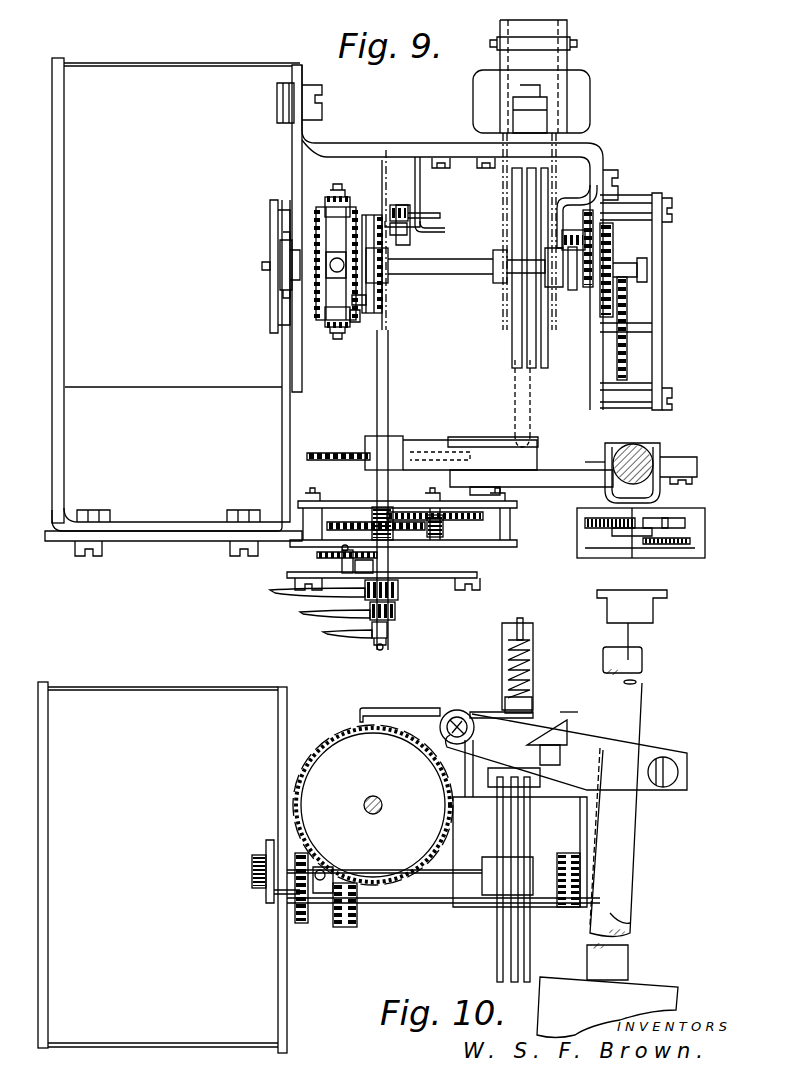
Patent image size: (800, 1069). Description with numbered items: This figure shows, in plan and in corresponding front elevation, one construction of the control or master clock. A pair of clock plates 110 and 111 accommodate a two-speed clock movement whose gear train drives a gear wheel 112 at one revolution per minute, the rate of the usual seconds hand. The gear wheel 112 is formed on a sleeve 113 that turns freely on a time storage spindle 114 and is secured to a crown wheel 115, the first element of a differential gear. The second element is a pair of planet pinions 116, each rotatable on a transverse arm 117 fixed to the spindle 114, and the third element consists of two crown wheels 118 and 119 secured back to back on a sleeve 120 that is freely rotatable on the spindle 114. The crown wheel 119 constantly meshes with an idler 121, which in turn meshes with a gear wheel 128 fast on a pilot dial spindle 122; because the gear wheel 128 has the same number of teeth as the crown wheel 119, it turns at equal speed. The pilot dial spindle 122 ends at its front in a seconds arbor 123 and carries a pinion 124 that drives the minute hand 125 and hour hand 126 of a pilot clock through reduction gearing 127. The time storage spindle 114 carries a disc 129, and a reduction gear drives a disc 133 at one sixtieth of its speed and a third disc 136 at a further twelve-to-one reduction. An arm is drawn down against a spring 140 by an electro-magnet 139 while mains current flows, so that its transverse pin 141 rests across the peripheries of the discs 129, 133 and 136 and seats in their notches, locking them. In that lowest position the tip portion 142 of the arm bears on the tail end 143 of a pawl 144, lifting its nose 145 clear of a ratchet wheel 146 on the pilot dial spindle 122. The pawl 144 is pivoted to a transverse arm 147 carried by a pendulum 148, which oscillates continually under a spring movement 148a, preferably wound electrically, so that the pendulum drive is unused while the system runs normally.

In FIG. 9, the clock plate 110 is at (64, 85).
In FIG. 9, the clock plate 111 is at (298, 130).
In FIG. 9, the gear wheel 112 is at (282, 238).
In FIG. 9, the sleeve 113 is at (305, 268).
In FIG. 9, the time storage spindle 114 is at (475, 274).
In FIG. 9, the crown wheel 115 is at (315, 228).
In FIG. 9, the planet pinions 116 is at (337, 192).
In FIG. 9, the transverse arm 117 is at (355, 285).
In FIG. 9, the crown wheel 118 is at (352, 317).
In FIG. 9, the crown wheel 119 is at (360, 297).
In FIG. 9, the sleeve 120 is at (398, 250).
In FIG. 9, the idler 121 is at (402, 205).
In FIG. 9, the pilot dial spindle 122 is at (410, 400).
In FIG. 9, the seconds arbor 123 is at (388, 630).
In FIG. 9, the pinion 124 is at (400, 502).
In FIG. 9, the minute hand 125 is at (303, 613).
In FIG. 9, the hour hand 126 is at (282, 590).
In FIG. 9, the reduction gearing 127 is at (418, 560).
In FIG. 9, the gear wheel 128 is at (418, 214).
In FIG. 9, the disc 129 is at (512, 348).
In FIG. 10, the disc 129 is at (497, 942).
In FIG. 9, the disc 133 is at (527, 373).
In FIG. 10, the disc 133 is at (517, 983).
In FIG. 9, the disc 136 is at (548, 348).
In FIG. 10, the disc 136 is at (530, 930).
In FIG. 9, the electro-magnet 139 is at (590, 98).
In FIG. 10, the spring 140 is at (523, 640).
In FIG. 10, the transverse pin 141 is at (548, 752).
In FIG. 10, the tip portion 142 is at (523, 745).
In FIG. 10, the tail end 143 is at (488, 712).
In FIG. 10, the pawl 144 is at (472, 714).
In FIG. 10, the nose 145 is at (420, 710).
In FIG. 9, the ratchet wheel 146 is at (355, 453).
In FIG. 10, the ratchet wheel 146 is at (352, 748).
In FIG. 10, the transverse arm 147 is at (635, 670).
In FIG. 9, the pendulum 148 is at (640, 448).
In FIG. 10, the pendulum 148 is at (615, 925).
In FIG. 9, the spring movement 148a is at (700, 508).